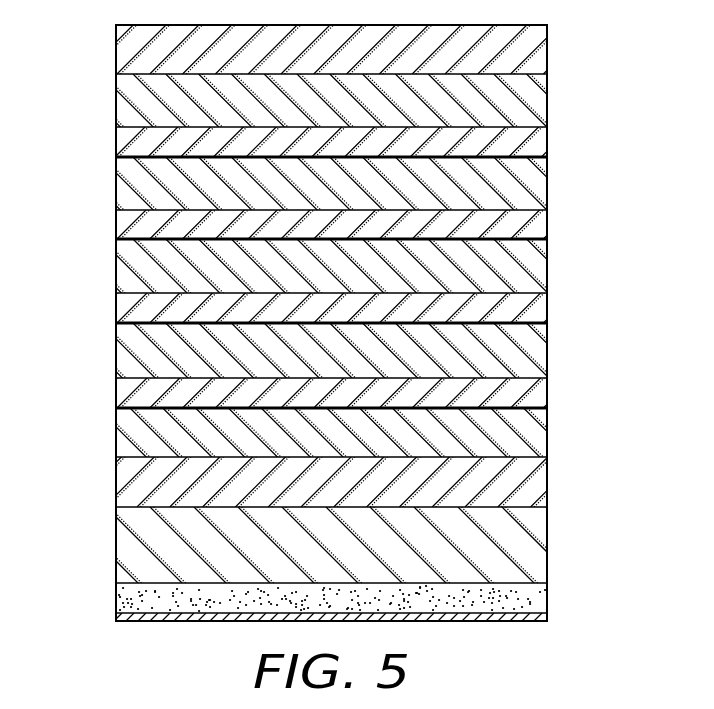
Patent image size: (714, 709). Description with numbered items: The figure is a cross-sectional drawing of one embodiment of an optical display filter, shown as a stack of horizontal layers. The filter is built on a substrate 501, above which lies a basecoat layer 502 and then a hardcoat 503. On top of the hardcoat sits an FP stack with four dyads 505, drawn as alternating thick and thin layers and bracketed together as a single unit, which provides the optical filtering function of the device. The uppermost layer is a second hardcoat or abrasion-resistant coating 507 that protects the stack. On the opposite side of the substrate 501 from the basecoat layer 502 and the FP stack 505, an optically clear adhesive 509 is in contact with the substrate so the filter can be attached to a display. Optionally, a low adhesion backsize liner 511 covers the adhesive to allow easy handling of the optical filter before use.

The second hardcoat or abrasion-resistant coating 507 is at (547, 52).
The FP stack with four dyads 505 is at (102, 408).
The hardcoat 503 is at (535, 435).
The basecoat layer 502 is at (535, 480).
The substrate 501 is at (535, 527).
The optically clear adhesive 509 is at (535, 598).
The low adhesion backsize liner 511 is at (549, 620).